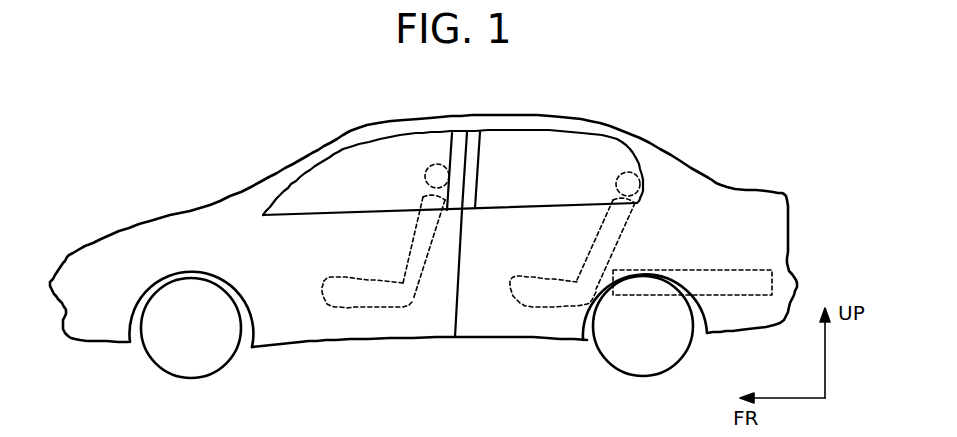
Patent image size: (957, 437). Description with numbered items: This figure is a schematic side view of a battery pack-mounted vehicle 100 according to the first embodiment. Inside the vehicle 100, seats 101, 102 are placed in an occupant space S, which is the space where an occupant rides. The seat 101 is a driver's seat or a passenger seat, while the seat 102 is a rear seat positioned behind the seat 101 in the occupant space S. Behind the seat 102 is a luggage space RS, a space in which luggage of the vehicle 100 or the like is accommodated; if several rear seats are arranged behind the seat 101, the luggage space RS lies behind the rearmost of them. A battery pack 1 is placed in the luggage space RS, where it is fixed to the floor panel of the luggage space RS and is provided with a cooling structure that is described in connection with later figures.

The vehicle 100 is at (311, 132).
The seat 101 is at (442, 166).
The seat 102 is at (635, 172).
The occupant space S is at (545, 167).
The luggage space RS is at (687, 230).
The battery pack 1 is at (730, 268).